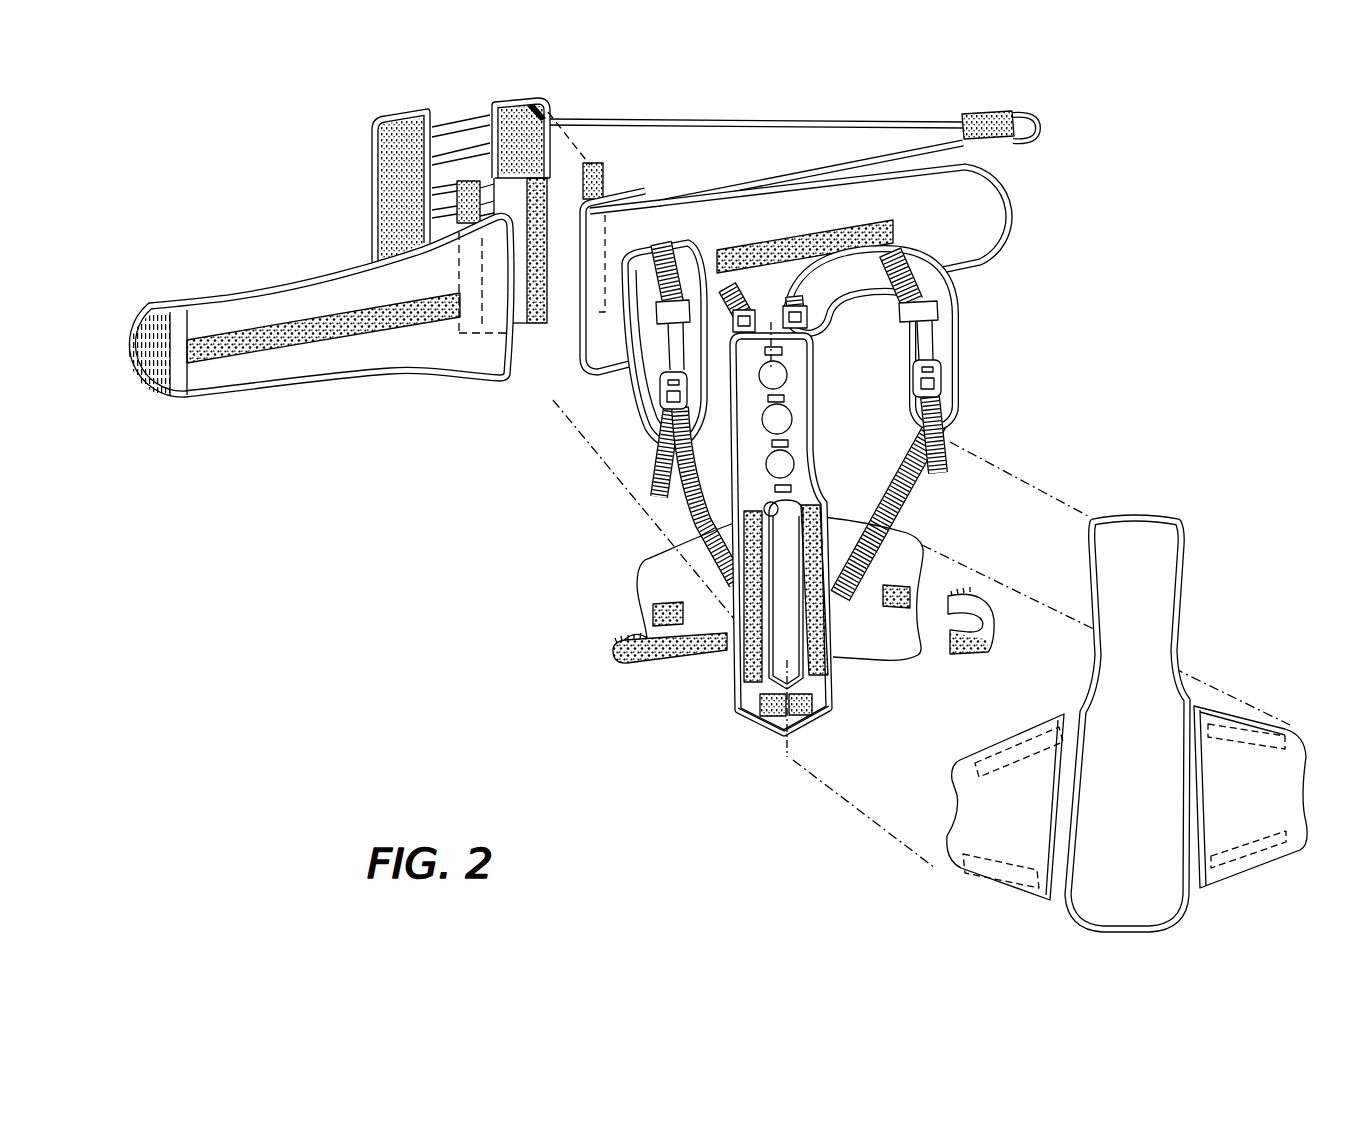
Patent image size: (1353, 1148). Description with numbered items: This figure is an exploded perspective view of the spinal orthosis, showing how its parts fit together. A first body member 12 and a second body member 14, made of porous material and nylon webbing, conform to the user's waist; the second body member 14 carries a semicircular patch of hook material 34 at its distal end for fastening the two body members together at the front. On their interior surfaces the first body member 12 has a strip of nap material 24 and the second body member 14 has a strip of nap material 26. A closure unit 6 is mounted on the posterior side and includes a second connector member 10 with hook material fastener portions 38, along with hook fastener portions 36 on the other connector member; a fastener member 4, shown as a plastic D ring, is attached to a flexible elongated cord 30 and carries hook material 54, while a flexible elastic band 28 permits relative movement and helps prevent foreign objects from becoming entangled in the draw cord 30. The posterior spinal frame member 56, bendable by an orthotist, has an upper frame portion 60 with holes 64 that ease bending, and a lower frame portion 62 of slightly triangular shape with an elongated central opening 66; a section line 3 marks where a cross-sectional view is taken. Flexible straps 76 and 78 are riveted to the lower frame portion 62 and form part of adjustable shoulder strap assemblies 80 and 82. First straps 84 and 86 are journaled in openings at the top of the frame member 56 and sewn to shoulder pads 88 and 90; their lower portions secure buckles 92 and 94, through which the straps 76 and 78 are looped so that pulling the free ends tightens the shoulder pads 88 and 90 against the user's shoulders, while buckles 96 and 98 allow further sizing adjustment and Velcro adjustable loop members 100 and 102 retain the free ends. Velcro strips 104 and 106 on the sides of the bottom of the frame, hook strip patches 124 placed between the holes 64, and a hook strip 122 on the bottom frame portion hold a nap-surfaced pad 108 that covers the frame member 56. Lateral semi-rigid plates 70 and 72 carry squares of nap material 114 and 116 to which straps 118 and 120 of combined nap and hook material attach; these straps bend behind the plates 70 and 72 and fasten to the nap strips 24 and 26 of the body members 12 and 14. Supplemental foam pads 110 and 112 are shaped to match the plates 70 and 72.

The section line 3- 3 is at (797, 743).
The fastener member 4 is at (1034, 124).
The closure unit 6 is at (376, 259).
The second connector member 10 is at (510, 100).
The first body member 12 is at (985, 212).
The second body member 14 is at (320, 334).
The strip of nap material 24 is at (853, 230).
The strip of nap material 26 is at (377, 328).
The flexible elastic band 28 is at (538, 347).
The flexible elongated cord 30 is at (778, 122).
The patch of hook material 34 is at (160, 390).
The fastener portions 36 is at (383, 202).
The hook material 38 is at (545, 112).
The hook material 54 is at (982, 116).
The posterior spinal frame member 56 is at (776, 464).
The upper frame portion 60 is at (785, 562).
The lower frame portion 62 is at (665, 682).
The holes 64 is at (792, 427).
The elongated central opening 66 is at (766, 499).
The lateral semi-rigid plate 70 is at (616, 624).
The lateral semi-rigid plate 72 is at (939, 572).
The flexible strap 76 is at (683, 506).
The flexible strap 78 is at (900, 490).
The adjustable shoulder strap assembly 80 is at (930, 424).
The adjustable shoulder strap assembly 82 is at (636, 372).
The first strap 84 is at (915, 277).
The first strap 86 is at (656, 247).
The shoulder pad 88 is at (653, 365).
The shoulder pad 90 is at (950, 333).
The buckle 92 is at (940, 392).
The buckle 94 is at (662, 405).
The buckle 96 is at (747, 300).
The buckle 98 is at (780, 303).
The Velcro adjustable loop member 100 is at (681, 305).
The Velcro adjustable loop member 102 is at (903, 312).
The Velcro strip 104 is at (747, 667).
The Velcro strip 106 is at (833, 652).
The spinal frame member pad 108 is at (1148, 552).
The supplemental foam pad 110 is at (969, 868).
The supplemental foam pad 112 is at (1272, 844).
The square of nap material 114 is at (652, 610).
The square of nap material 116 is at (913, 592).
The strap 118 is at (627, 668).
The strap 120 is at (990, 605).
The Velcro hook strip 122 is at (770, 718).
The Velcro hook strips 124 is at (790, 394).